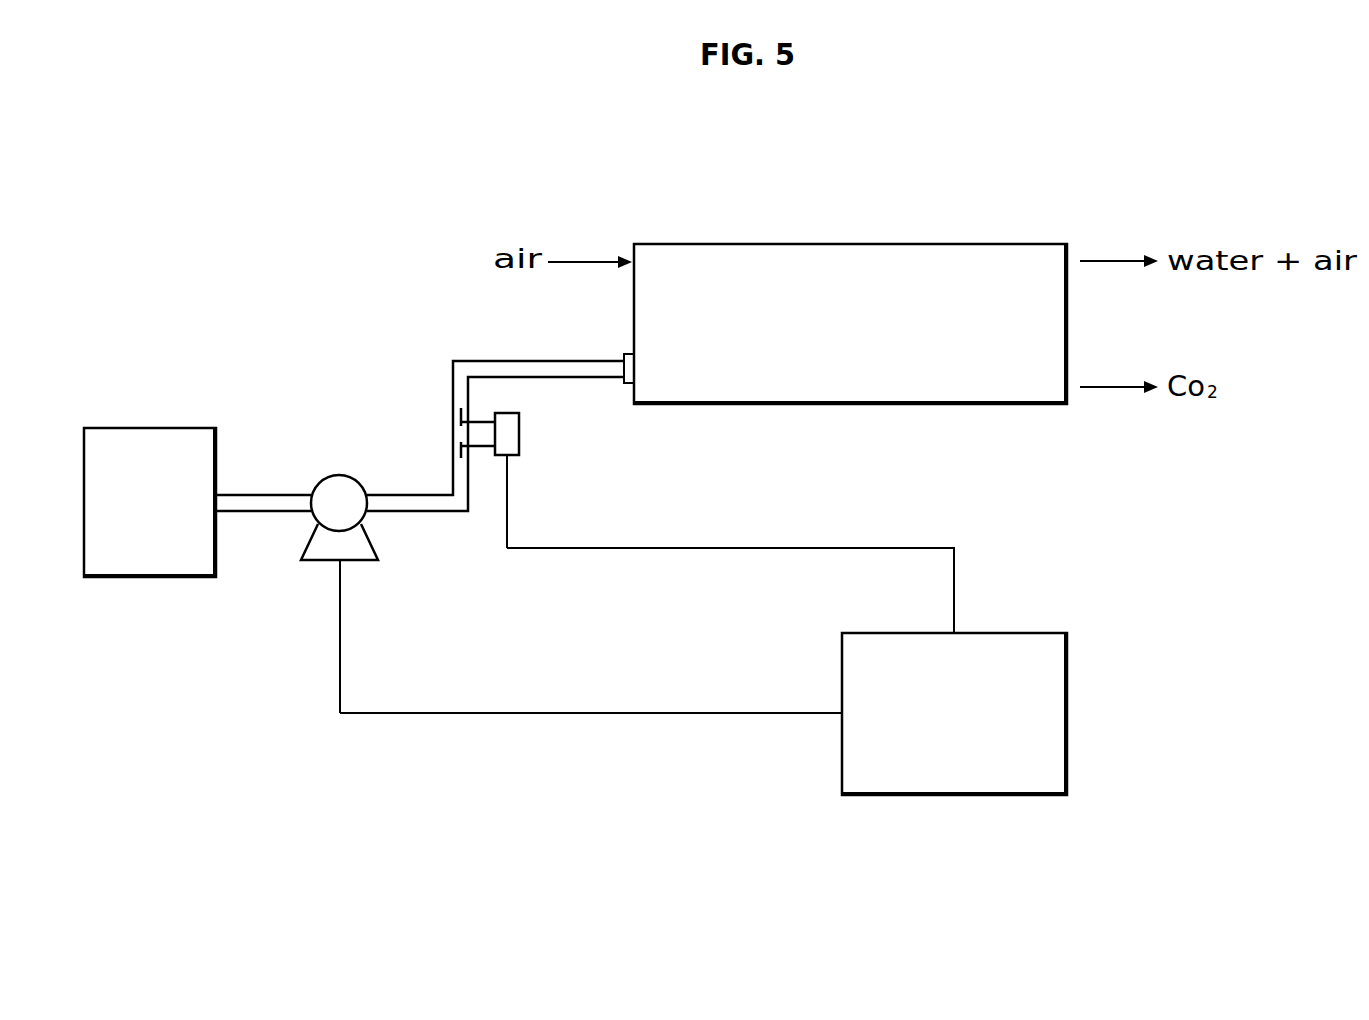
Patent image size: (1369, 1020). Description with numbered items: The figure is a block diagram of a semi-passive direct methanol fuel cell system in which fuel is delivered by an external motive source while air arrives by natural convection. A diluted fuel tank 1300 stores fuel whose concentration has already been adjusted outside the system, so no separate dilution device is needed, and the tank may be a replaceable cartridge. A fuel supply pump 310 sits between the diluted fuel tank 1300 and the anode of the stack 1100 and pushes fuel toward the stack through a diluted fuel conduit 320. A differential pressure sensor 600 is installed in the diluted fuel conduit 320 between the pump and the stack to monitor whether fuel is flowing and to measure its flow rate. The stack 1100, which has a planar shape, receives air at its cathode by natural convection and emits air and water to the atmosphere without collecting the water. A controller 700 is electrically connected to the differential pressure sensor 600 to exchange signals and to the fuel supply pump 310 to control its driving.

The diluted fuel tank 1300 is at (147, 428).
The fuel supply pump 310 is at (339, 475).
The diluted fuel conduit 320 is at (438, 503).
The differential pressure sensor 600 is at (519, 431).
The stack 1100 is at (848, 244).
The controller 700 is at (1067, 711).